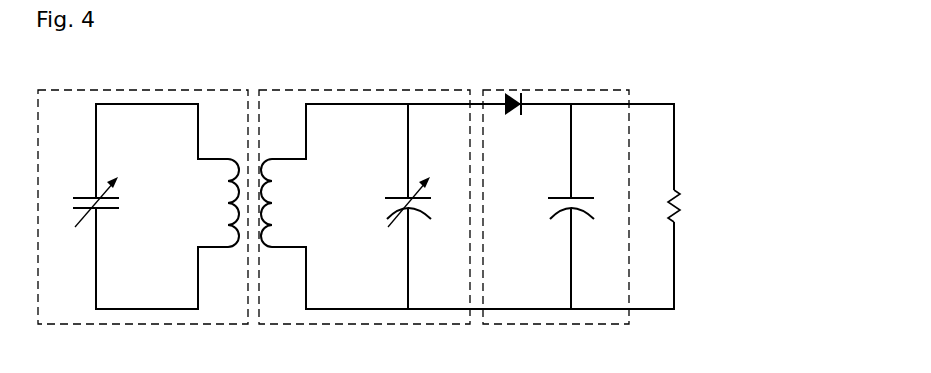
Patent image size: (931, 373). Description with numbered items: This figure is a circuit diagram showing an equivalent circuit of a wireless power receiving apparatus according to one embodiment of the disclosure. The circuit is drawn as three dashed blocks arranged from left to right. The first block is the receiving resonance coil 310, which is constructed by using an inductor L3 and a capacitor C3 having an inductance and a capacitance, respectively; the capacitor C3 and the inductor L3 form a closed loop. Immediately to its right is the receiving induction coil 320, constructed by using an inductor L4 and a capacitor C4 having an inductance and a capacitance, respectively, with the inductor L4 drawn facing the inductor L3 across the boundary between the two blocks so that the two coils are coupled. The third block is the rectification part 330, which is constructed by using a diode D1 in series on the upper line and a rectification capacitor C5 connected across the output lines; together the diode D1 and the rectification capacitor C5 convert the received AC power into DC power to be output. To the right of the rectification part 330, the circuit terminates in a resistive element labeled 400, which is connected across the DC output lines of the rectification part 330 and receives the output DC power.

The receiving resonance coil 310 is at (168, 88).
The receiving induction coil 320 is at (384, 88).
The rectification part 330 is at (572, 88).
The load 400 is at (690, 188).
The capacitor C3 is at (83, 202).
The inductor L3 is at (218, 203).
The inductor L4 is at (287, 203).
The capacitor C4 is at (422, 206).
The diode D1 is at (513, 89).
The rectification capacitor C5 is at (585, 206).